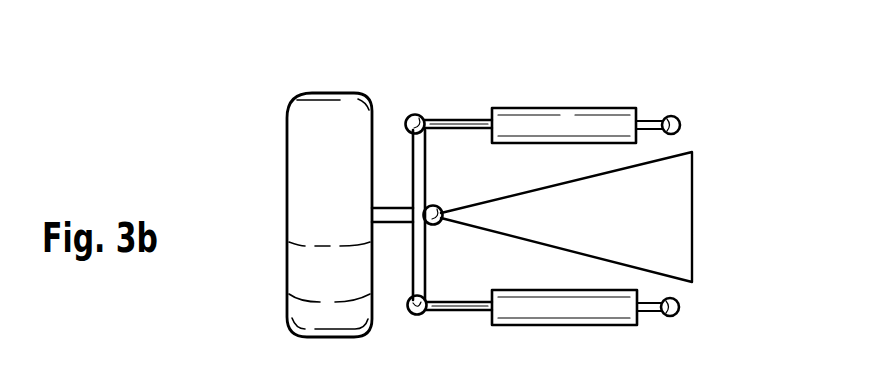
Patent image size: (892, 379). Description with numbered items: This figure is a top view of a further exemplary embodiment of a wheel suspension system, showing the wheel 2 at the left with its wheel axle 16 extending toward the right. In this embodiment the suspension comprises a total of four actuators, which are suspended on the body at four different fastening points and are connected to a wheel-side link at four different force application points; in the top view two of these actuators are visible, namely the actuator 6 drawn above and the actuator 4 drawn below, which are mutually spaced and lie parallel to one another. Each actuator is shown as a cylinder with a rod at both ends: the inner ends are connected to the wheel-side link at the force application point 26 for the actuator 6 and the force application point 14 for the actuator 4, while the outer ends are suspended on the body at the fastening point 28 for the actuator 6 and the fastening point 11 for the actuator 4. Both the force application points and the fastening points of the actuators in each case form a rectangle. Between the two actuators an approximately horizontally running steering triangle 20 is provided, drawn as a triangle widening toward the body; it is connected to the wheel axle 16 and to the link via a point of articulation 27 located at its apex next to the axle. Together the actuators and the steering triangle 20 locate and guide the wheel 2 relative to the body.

The wheel 2 is at (312, 220).
The wheel axle 16 is at (395, 212).
The force application point 26 is at (421, 114).
The point of articulation 27 is at (437, 206).
The force application point 14 is at (416, 316).
The actuator 6 is at (568, 122).
The actuator 4 is at (552, 303).
The fastening point 28 is at (678, 118).
The fastening point 11 is at (680, 308).
The steering triangle 20 is at (665, 216).